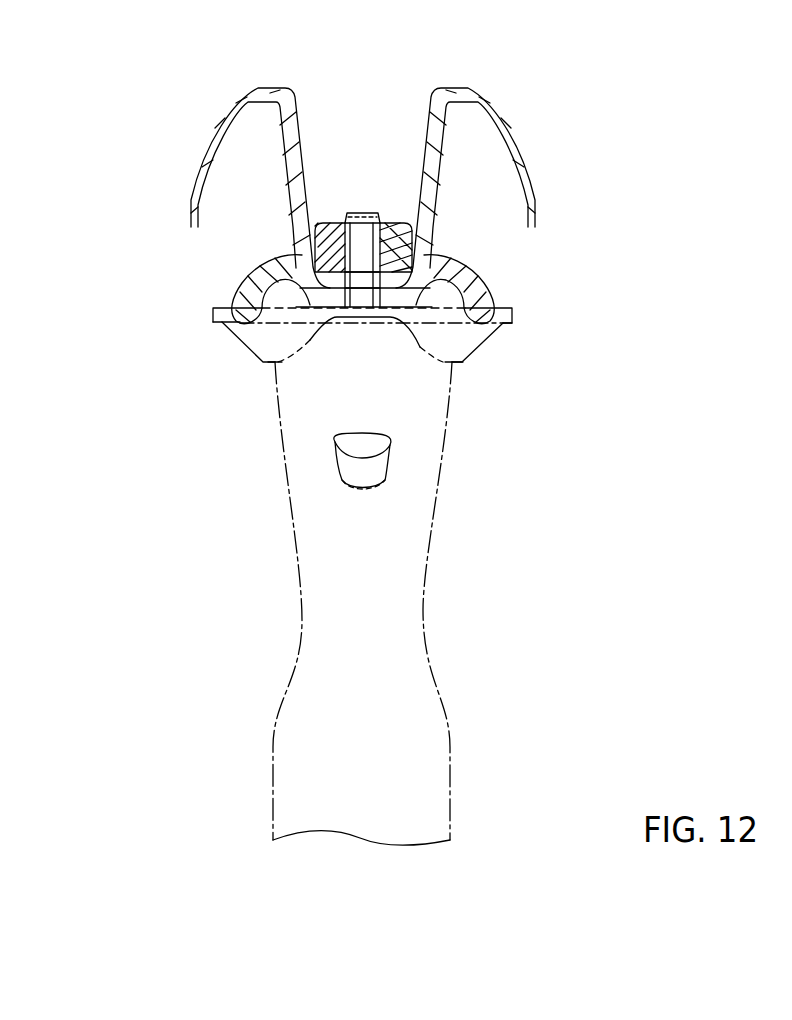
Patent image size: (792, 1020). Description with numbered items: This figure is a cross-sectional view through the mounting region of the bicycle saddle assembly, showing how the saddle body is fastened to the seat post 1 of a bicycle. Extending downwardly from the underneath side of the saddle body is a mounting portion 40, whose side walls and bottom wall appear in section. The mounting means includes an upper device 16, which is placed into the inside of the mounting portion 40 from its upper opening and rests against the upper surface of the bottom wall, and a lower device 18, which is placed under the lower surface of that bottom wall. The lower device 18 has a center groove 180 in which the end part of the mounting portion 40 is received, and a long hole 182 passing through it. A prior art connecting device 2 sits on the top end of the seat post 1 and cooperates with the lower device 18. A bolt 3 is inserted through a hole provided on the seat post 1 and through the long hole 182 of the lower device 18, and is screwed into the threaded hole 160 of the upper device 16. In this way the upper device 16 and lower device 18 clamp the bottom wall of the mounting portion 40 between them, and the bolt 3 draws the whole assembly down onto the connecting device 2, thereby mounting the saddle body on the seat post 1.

The seat post 1 is at (423, 610).
The connecting device 2 is at (478, 352).
The bolt 3 is at (356, 457).
The upper device 16 is at (332, 222).
The lower device 18 is at (286, 278).
The mounting portion 40 is at (440, 228).
The threaded hole 160 is at (404, 250).
The center groove 180 is at (325, 300).
The long hole 182 is at (235, 287).